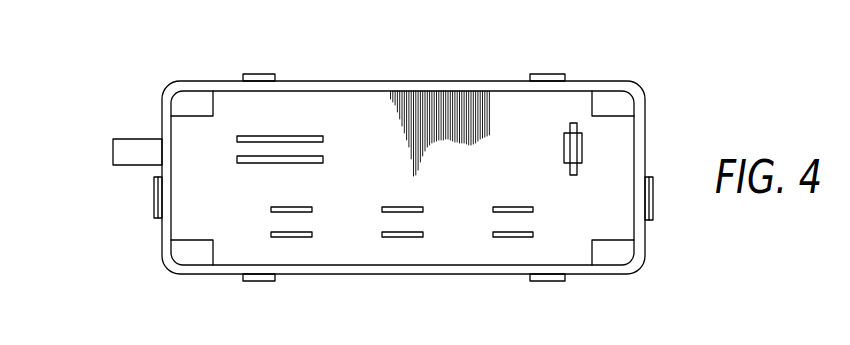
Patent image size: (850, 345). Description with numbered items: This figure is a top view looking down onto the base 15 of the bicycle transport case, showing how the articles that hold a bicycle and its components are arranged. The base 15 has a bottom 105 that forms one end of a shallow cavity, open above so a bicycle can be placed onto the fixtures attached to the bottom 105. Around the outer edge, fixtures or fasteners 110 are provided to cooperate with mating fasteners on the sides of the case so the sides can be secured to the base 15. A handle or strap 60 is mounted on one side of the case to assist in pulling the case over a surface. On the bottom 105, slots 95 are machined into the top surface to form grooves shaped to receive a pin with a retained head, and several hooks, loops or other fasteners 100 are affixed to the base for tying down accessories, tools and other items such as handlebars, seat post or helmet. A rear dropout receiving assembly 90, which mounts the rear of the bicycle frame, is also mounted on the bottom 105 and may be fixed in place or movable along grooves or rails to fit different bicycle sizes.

The base 15 is at (318, 81).
The handle or strap 60 is at (125, 153).
The rear dropout receiving assembly 90 is at (576, 150).
The slots 95 is at (237, 157).
The hooks, loops or other fasteners 100 is at (306, 237).
The bottom 105 is at (497, 133).
The fixtures or fasteners 110 is at (258, 74).